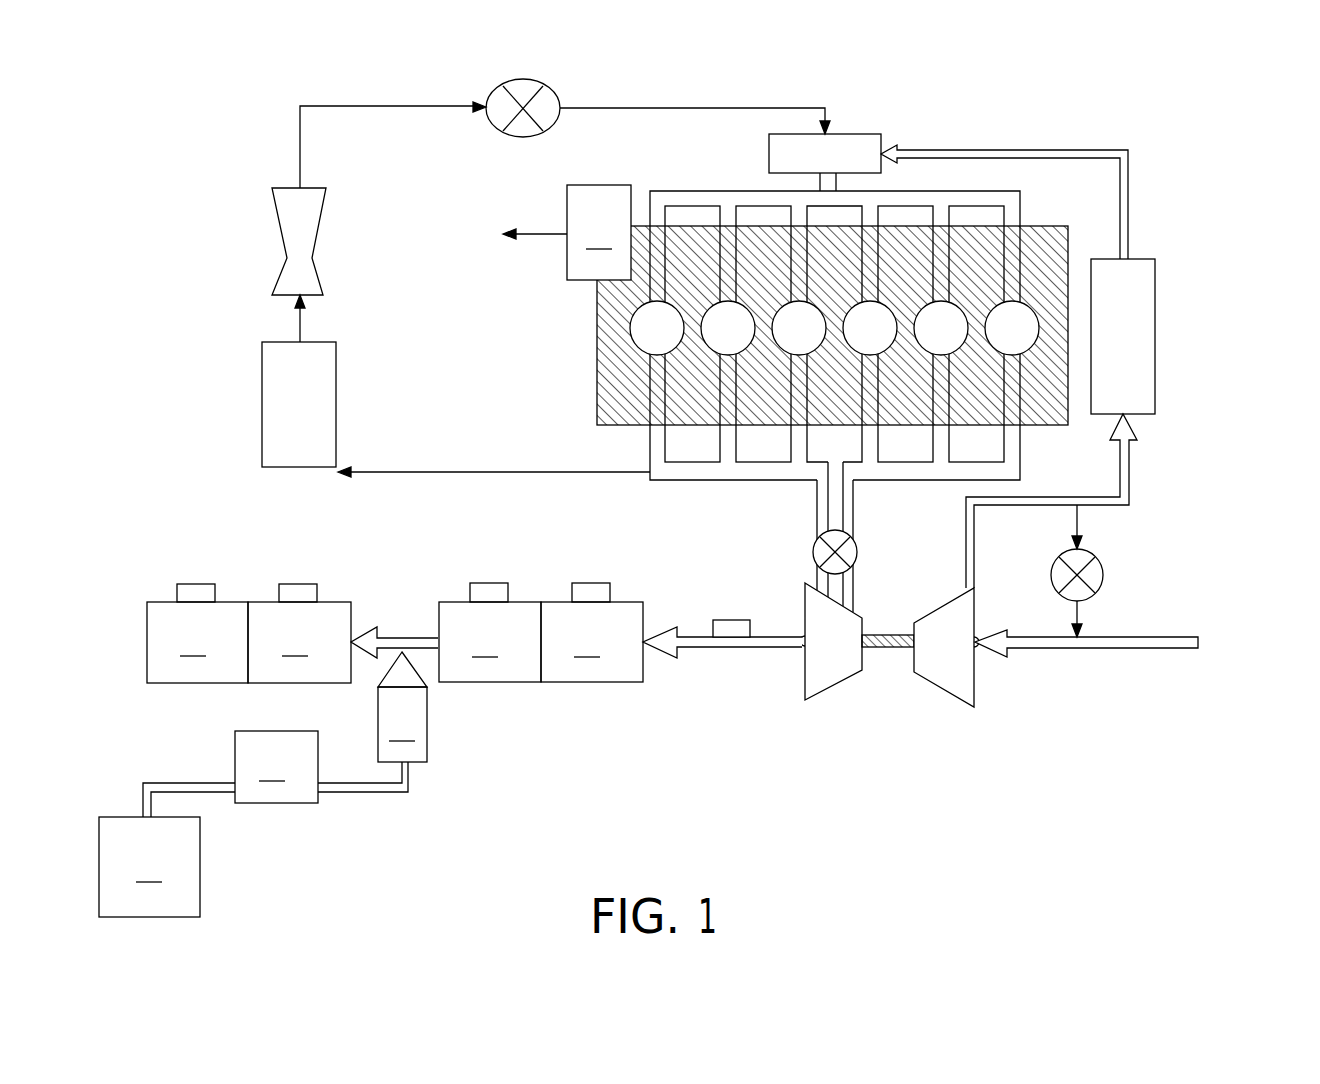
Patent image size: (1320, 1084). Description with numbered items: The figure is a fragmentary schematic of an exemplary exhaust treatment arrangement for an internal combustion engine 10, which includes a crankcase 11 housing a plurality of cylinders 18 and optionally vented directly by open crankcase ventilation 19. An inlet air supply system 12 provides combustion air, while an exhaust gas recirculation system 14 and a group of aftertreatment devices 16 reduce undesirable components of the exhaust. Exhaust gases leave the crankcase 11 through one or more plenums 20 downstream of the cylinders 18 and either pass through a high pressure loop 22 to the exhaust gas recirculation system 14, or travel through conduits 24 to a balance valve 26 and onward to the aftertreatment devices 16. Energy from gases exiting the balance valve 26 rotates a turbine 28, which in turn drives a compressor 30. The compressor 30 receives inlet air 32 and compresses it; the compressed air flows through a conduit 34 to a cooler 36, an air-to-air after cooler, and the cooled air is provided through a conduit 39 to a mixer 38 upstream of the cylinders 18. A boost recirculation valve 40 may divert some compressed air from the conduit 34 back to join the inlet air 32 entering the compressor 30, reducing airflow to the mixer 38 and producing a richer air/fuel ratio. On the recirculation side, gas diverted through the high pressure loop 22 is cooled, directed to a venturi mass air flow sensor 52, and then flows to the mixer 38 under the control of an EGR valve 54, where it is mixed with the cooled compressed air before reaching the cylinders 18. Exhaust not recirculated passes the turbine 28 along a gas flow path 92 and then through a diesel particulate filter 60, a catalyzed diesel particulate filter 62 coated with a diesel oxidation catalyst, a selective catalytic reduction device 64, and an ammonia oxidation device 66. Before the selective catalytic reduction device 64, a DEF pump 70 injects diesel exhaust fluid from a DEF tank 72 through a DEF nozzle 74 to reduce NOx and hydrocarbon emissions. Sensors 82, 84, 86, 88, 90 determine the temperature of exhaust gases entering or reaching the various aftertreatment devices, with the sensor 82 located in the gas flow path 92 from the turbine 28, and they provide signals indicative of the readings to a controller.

The internal combustion engine 10 is at (193, 147).
The crankcase 11 is at (597, 405).
The inlet air supply system 12 is at (1200, 558).
The exhaust gas recirculation system 14 is at (235, 316).
The aftertreatment devices 16 is at (746, 750).
The cylinders 18 is at (631, 333).
The open crankcase ventilation 19 is at (567, 232).
The plenums 20 is at (733, 480).
The high pressure loop 22 is at (409, 500).
The conduits 24 is at (853, 510).
The balance valve 26 is at (857, 560).
The turbine 28 is at (833, 687).
The compressor 30 is at (942, 687).
The inlet air 32 is at (1118, 650).
The conduit 34 is at (993, 507).
The cooler 36 is at (1155, 355).
The mixer 38 is at (866, 133).
The conduit 39 is at (1060, 148).
The boost recirculation valve 40 is at (1102, 588).
The venturi mass air flow sensor 52 is at (323, 222).
The EGR valve 54 is at (560, 125).
The diesel particulate filter 60 is at (592, 642).
The catalyzed diesel particulate filter 62 is at (490, 642).
The selective catalytic reduction device 64 is at (343, 642).
The ammonia oxidation device 66 is at (197, 642).
The DEF pump 70 is at (321, 767).
The DEF tank 72 is at (167, 850).
The DEF nozzle 74 is at (402, 707).
The sensor 82 is at (727, 625).
The sensor 84 is at (588, 592).
The sensor 86 is at (489, 592).
The sensor 88 is at (295, 592).
The sensor 90 is at (197, 592).
The gas flow path 92 is at (693, 652).